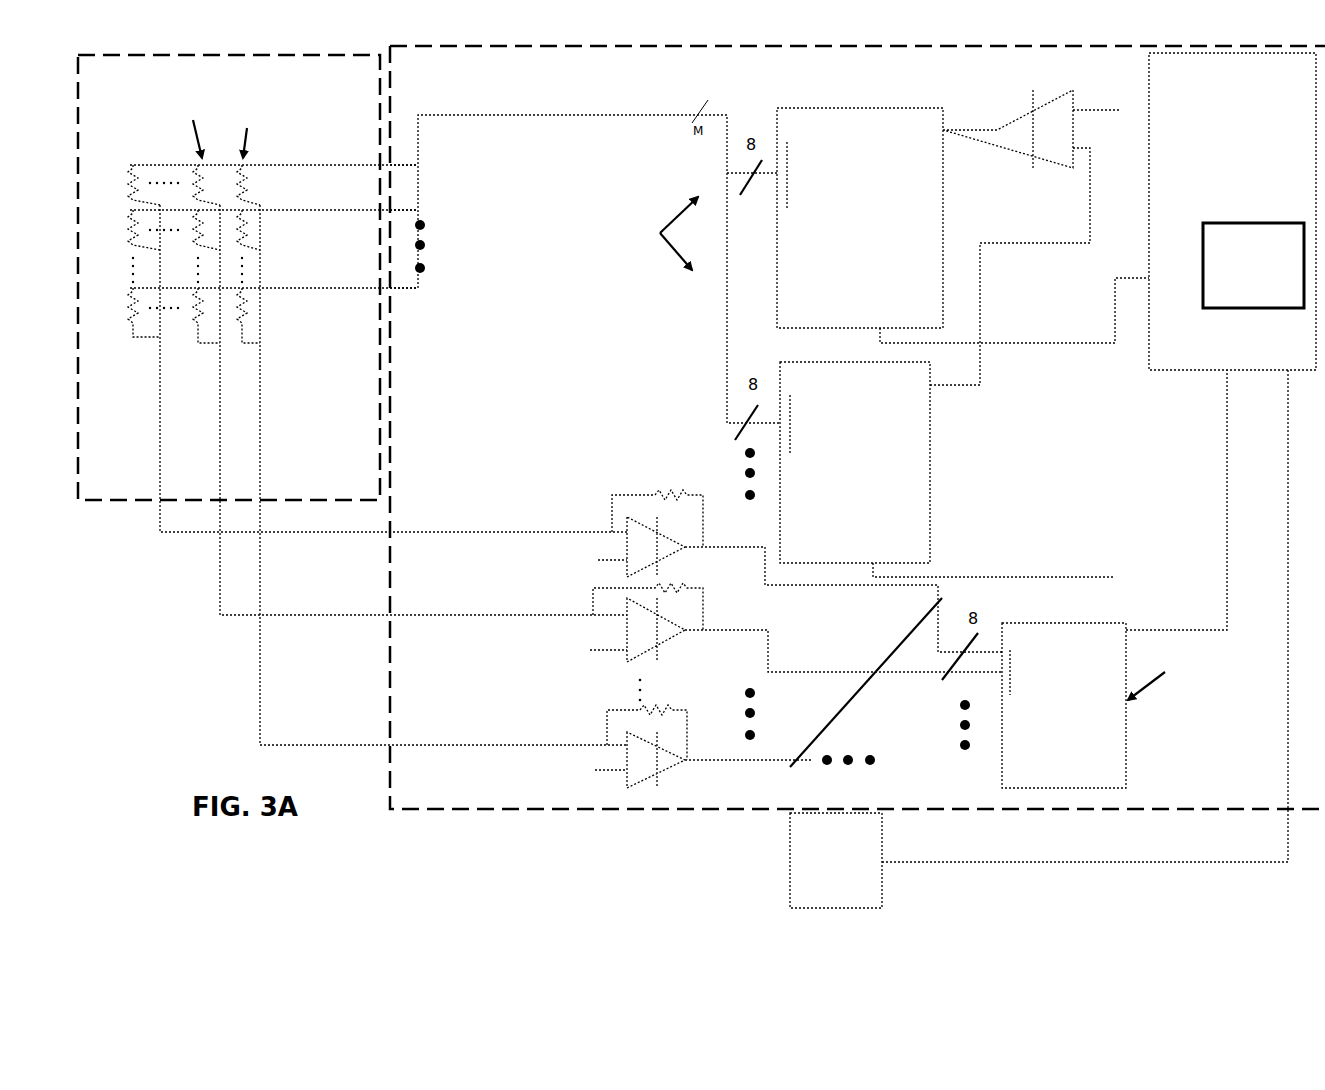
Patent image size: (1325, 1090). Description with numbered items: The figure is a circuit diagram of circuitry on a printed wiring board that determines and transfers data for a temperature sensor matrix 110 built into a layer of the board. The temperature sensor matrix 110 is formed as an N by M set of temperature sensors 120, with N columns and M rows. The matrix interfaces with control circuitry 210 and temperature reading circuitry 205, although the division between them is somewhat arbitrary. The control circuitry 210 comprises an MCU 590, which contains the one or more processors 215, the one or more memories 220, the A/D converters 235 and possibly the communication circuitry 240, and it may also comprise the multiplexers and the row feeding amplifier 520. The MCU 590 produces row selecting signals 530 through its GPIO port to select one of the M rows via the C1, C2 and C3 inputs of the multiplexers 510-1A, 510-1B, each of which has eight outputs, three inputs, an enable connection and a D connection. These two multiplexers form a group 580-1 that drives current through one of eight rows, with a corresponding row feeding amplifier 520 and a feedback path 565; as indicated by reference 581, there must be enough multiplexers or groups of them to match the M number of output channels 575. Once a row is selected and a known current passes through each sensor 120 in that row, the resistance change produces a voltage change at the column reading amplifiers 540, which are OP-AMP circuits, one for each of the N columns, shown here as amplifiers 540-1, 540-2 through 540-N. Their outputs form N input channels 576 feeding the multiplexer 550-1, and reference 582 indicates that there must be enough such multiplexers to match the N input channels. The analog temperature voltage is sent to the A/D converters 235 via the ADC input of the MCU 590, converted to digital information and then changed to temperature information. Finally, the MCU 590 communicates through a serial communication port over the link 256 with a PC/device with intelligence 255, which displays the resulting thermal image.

The temperature sensor matrix 110 is at (352, 400).
The temperature sensors 120 is at (250, 232).
The M number of output channels 575 is at (528, 117).
The group of multiplexers 580-1 is at (755, 108).
The multiplexer 510-1A is at (860, 207).
The multiplexer 510-1B is at (855, 453).
The enough multiplexers to match M number of output channels 581 is at (622, 187).
The row feeding amplifier 520 is at (1028, 132).
The feedback path 565 is at (982, 310).
The row selecting signals 530 is at (1032, 322).
The MCU 590 is at (1232, 211).
The one or more processors 215 is at (1253, 265).
The one or more memories 220 is at (1253, 265).
The A/D converters 235 is at (1253, 265).
The communication circuitry 240 is at (1253, 265).
The control circuitry 210 is at (590, 365).
The temperature reading circuitry 205 is at (590, 365).
The column reading amplifiers 540 is at (592, 520).
The column reading amplifier 540-1 is at (585, 555).
The column reading amplifier 540-2 is at (580, 640).
The column reading amplifier 540-N is at (585, 762).
The N input channels 576 is at (862, 632).
The multiplexer 550-1 is at (1114, 579).
The enough multiplexers to match N number of input channels 582 is at (1210, 670).
The PC/device with intelligence 255 is at (790, 880).
The link 256 is at (1135, 860).